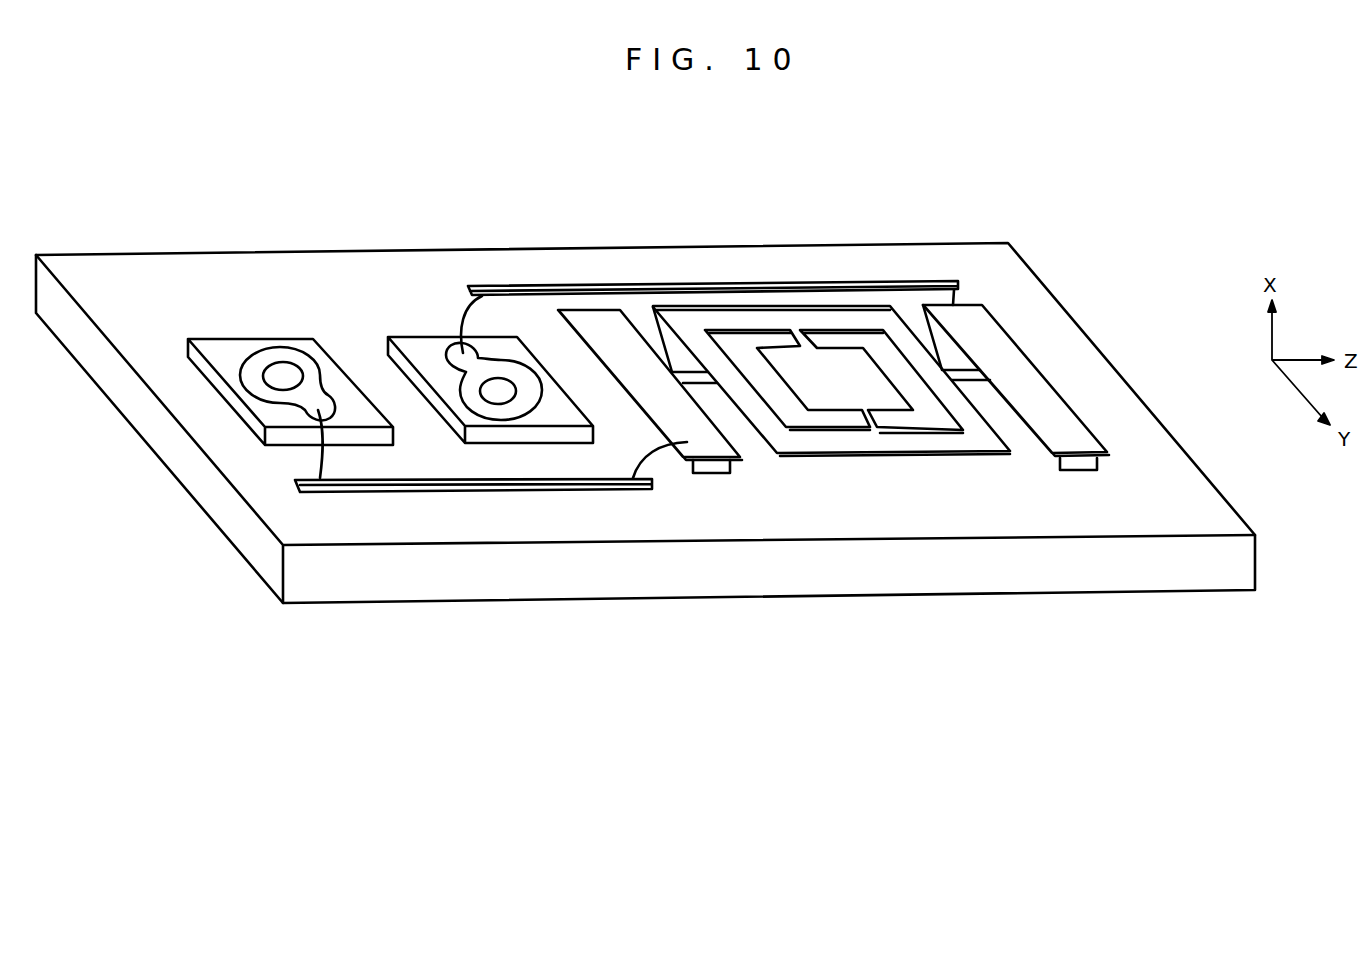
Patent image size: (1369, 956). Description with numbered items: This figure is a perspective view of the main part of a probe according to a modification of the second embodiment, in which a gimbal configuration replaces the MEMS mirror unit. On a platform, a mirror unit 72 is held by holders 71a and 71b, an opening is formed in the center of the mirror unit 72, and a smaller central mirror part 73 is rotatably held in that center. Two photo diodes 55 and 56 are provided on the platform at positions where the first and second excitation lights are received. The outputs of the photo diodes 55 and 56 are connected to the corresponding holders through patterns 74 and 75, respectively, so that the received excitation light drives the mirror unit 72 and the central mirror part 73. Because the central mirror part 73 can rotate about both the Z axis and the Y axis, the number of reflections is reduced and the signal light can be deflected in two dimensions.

The photo diode 55 is at (223, 347).
The photo diode 56 is at (428, 345).
The holder 71a is at (707, 448).
The holder 71b is at (1058, 438).
The mirror unit 72 is at (853, 447).
The central mirror part 73 is at (830, 365).
The pattern 74 is at (462, 485).
The pattern 75 is at (637, 287).